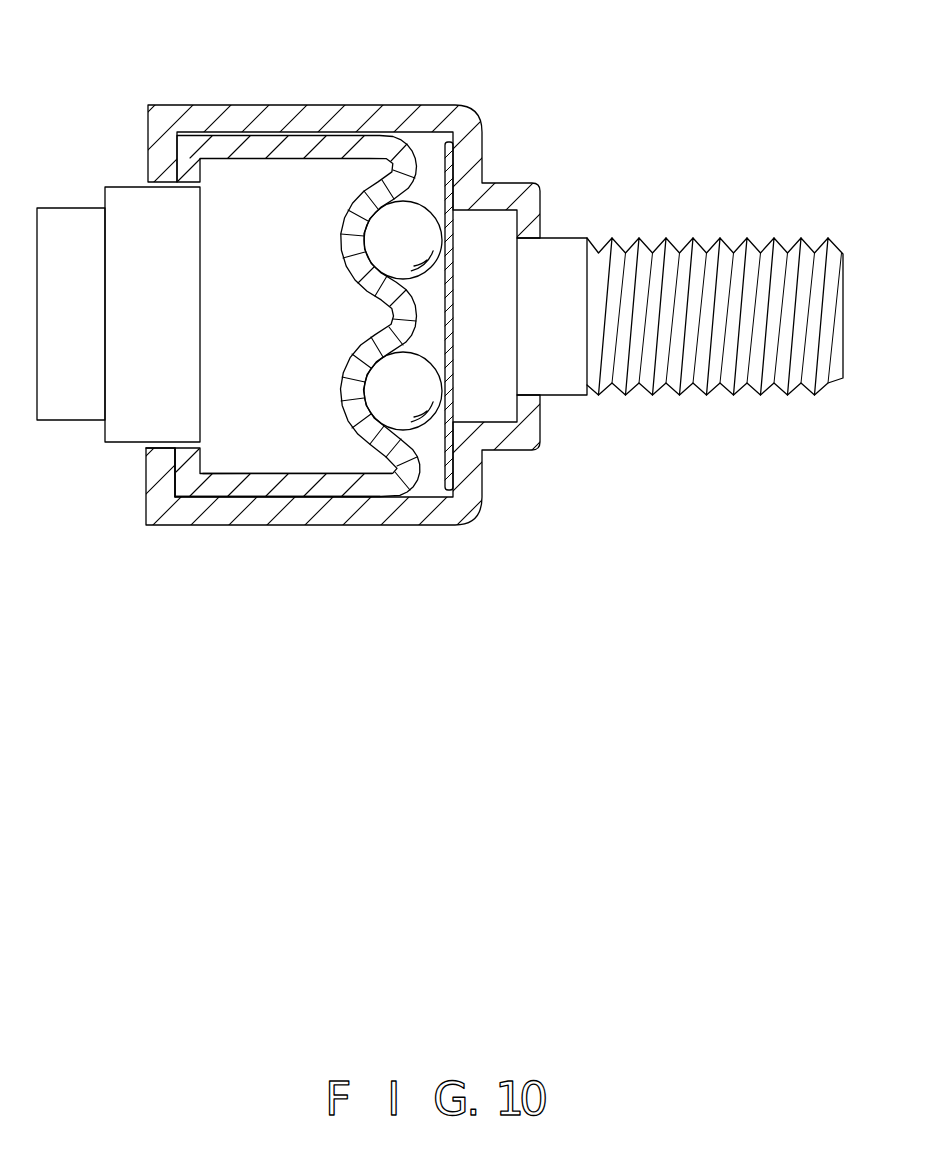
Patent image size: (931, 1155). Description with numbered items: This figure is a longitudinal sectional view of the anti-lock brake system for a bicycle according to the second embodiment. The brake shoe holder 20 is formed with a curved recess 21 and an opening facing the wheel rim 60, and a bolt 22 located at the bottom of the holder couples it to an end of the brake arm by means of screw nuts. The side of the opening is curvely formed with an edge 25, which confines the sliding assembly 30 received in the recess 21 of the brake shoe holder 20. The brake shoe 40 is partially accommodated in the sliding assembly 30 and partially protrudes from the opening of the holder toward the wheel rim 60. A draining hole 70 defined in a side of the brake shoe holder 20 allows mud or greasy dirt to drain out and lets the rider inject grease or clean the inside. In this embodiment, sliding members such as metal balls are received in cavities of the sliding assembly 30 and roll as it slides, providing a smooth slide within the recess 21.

The brake shoe holder 20 is at (395, 112).
The curved recess 21 is at (267, 130).
The bolt 22 is at (563, 256).
The curved edge 25 is at (157, 460).
The sliding assembly 30 is at (288, 487).
The brake shoe 40 is at (140, 213).
The wheel rim 60 is at (410, 216).
The draining hole 70 is at (456, 240).